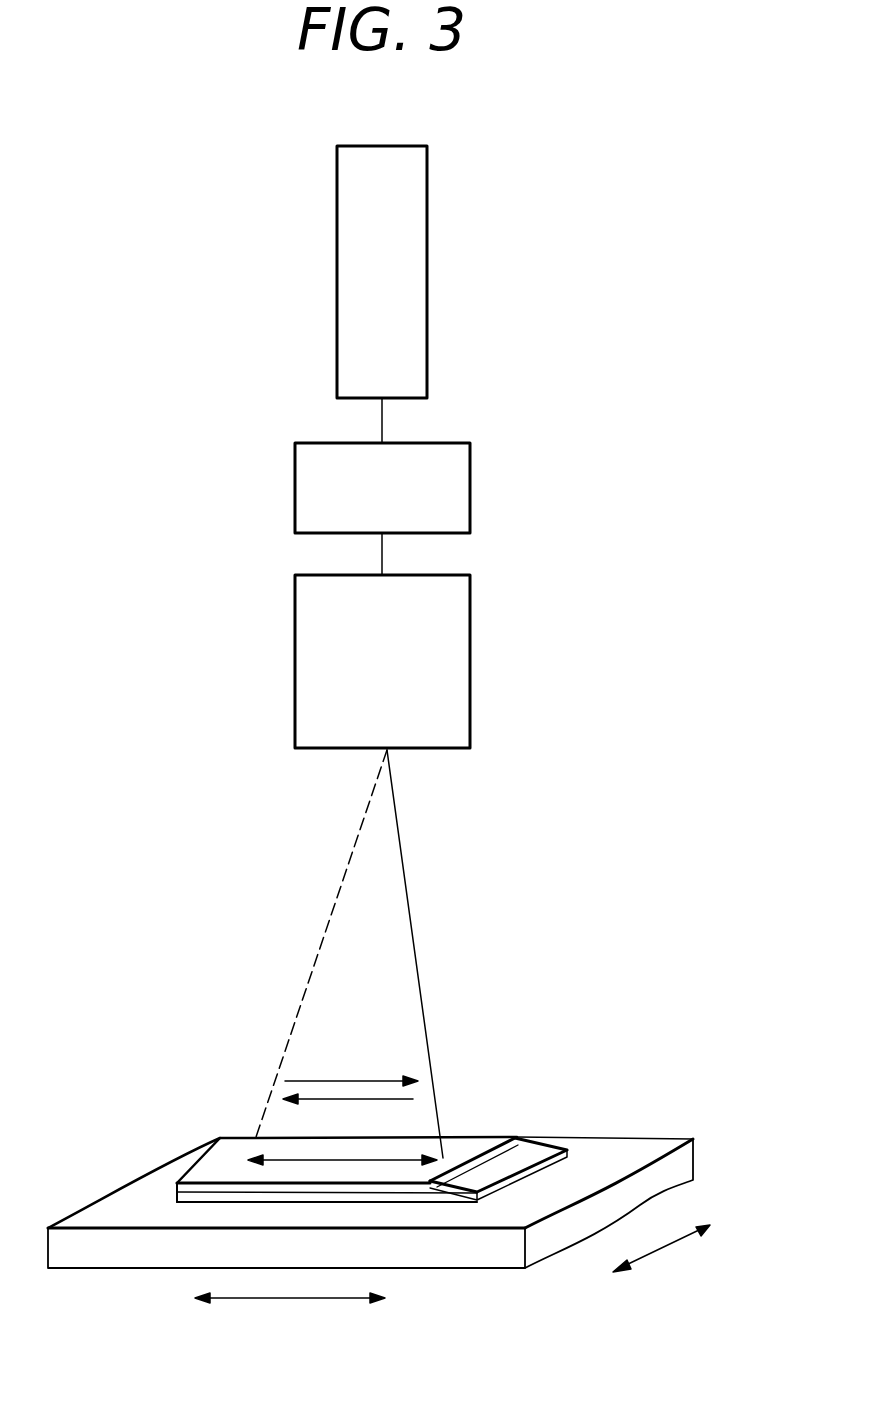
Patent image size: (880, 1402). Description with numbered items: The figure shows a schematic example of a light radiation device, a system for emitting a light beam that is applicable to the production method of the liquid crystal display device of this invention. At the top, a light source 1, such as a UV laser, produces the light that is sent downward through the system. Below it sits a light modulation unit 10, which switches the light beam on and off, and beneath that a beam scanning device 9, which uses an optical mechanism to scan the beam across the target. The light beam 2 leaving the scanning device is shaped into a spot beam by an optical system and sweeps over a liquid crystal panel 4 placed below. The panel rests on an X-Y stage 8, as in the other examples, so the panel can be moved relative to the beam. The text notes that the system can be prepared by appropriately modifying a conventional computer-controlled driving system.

The light source 1 is at (428, 248).
The light modulation unit 10 is at (471, 459).
The beam scanning device 9 is at (471, 612).
The light beam 2 is at (412, 922).
The liquid crystal panel 4 is at (470, 1142).
The X-Y stage 8 is at (697, 1157).